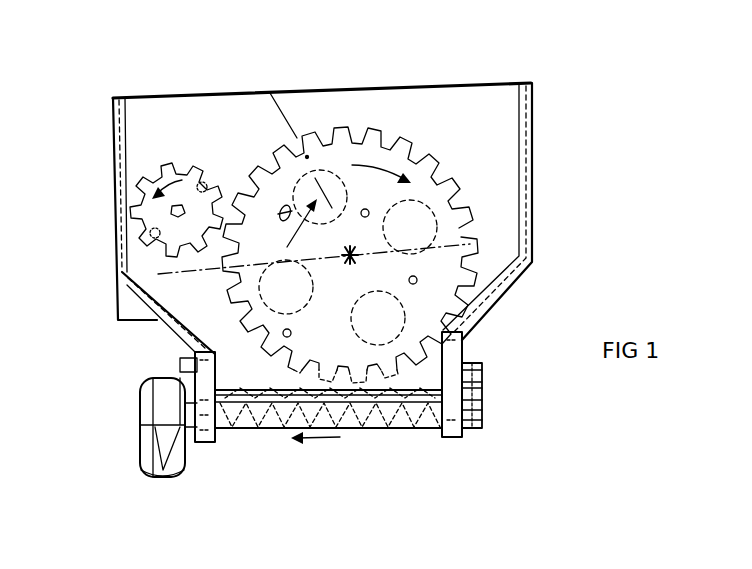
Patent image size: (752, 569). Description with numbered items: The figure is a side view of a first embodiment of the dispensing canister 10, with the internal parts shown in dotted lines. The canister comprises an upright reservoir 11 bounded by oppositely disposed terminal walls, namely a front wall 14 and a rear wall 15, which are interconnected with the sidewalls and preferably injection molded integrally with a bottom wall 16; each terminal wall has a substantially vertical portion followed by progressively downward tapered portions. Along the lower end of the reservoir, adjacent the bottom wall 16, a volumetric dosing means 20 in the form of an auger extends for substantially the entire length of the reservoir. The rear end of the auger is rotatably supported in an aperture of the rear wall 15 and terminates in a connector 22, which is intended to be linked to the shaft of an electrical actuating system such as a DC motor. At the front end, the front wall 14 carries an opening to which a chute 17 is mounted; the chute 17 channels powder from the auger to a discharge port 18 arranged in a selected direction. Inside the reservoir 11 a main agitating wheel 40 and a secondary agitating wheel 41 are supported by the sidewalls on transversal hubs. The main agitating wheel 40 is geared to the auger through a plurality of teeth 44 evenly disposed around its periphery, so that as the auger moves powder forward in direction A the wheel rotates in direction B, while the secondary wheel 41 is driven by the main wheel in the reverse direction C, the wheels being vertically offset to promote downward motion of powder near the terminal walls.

The dispensing canister 10 is at (624, 191).
The upright reservoir 11 is at (499, 72).
The front wall 14 is at (117, 212).
The rear wall 15 is at (535, 223).
The bottom wall 16 is at (355, 428).
The chute 17 is at (136, 461).
The discharge port 18 is at (172, 478).
The volumetric dosing means 20 is at (280, 421).
The connector 22 is at (490, 432).
The main agitating wheel 40 is at (448, 283).
The secondary agitating wheel 41 is at (191, 166).
The teeth 44 is at (447, 188).